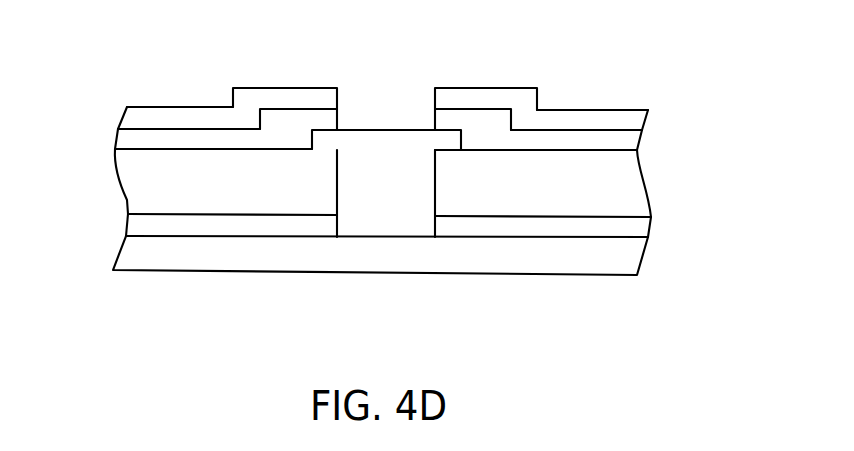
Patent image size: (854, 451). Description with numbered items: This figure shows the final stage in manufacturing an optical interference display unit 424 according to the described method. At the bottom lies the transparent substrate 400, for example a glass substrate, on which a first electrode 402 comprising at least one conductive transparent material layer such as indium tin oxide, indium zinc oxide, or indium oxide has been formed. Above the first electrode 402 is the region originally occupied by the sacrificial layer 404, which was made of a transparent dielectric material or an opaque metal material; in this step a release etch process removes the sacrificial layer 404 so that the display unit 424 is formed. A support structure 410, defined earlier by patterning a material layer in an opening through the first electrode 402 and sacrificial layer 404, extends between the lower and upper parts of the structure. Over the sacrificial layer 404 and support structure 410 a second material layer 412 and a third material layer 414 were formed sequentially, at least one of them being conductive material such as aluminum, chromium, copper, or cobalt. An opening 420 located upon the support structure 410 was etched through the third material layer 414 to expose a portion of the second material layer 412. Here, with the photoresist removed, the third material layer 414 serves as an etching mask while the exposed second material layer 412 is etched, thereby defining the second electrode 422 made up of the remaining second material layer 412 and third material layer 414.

The transparent substrate 400 is at (612, 261).
The first electrode 402 is at (612, 231).
The sacrificial layer 404 is at (612, 192).
The support structure 410 is at (368, 181).
The second material layer 412 is at (617, 142).
The third material layer 414 is at (613, 120).
The opening 420 is at (388, 121).
The second electrode 422 is at (729, 115).
The optical interference display unit 424 is at (171, 95).